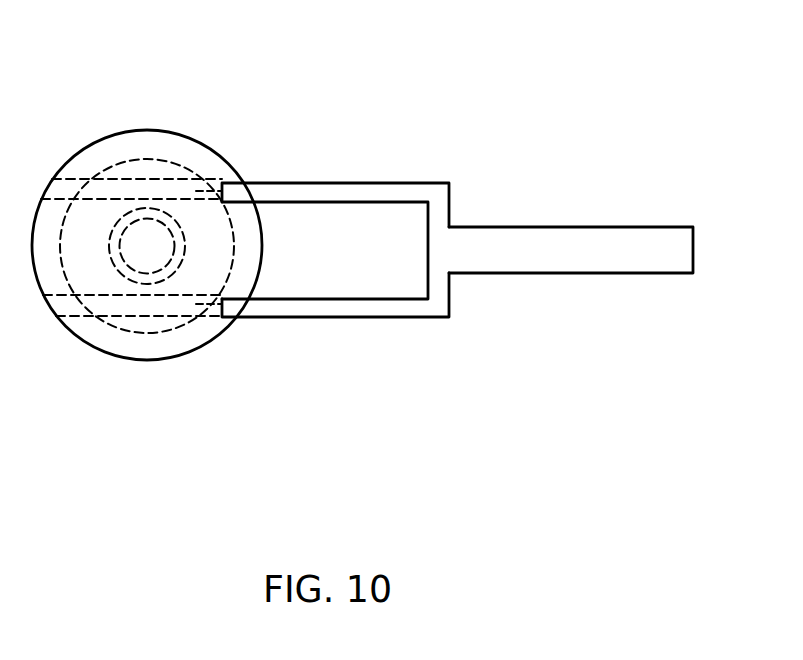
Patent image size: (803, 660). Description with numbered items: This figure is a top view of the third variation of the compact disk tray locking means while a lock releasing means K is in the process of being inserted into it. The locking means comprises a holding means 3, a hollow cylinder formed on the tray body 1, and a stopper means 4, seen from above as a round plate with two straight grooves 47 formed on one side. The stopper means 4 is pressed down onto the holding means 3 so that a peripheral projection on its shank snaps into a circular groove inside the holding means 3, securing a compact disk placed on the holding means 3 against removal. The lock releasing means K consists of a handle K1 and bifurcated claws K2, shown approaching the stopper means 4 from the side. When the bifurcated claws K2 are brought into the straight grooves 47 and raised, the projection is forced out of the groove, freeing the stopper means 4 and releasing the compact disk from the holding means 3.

The tray body 1 is at (112, 98).
The holding means 3 is at (158, 333).
The stopper means 4 is at (175, 128).
The straight grooves 47 is at (246, 183).
The lock releasing means K is at (484, 240).
The handle K1 is at (653, 263).
The bifurcated claws K2 is at (395, 192).